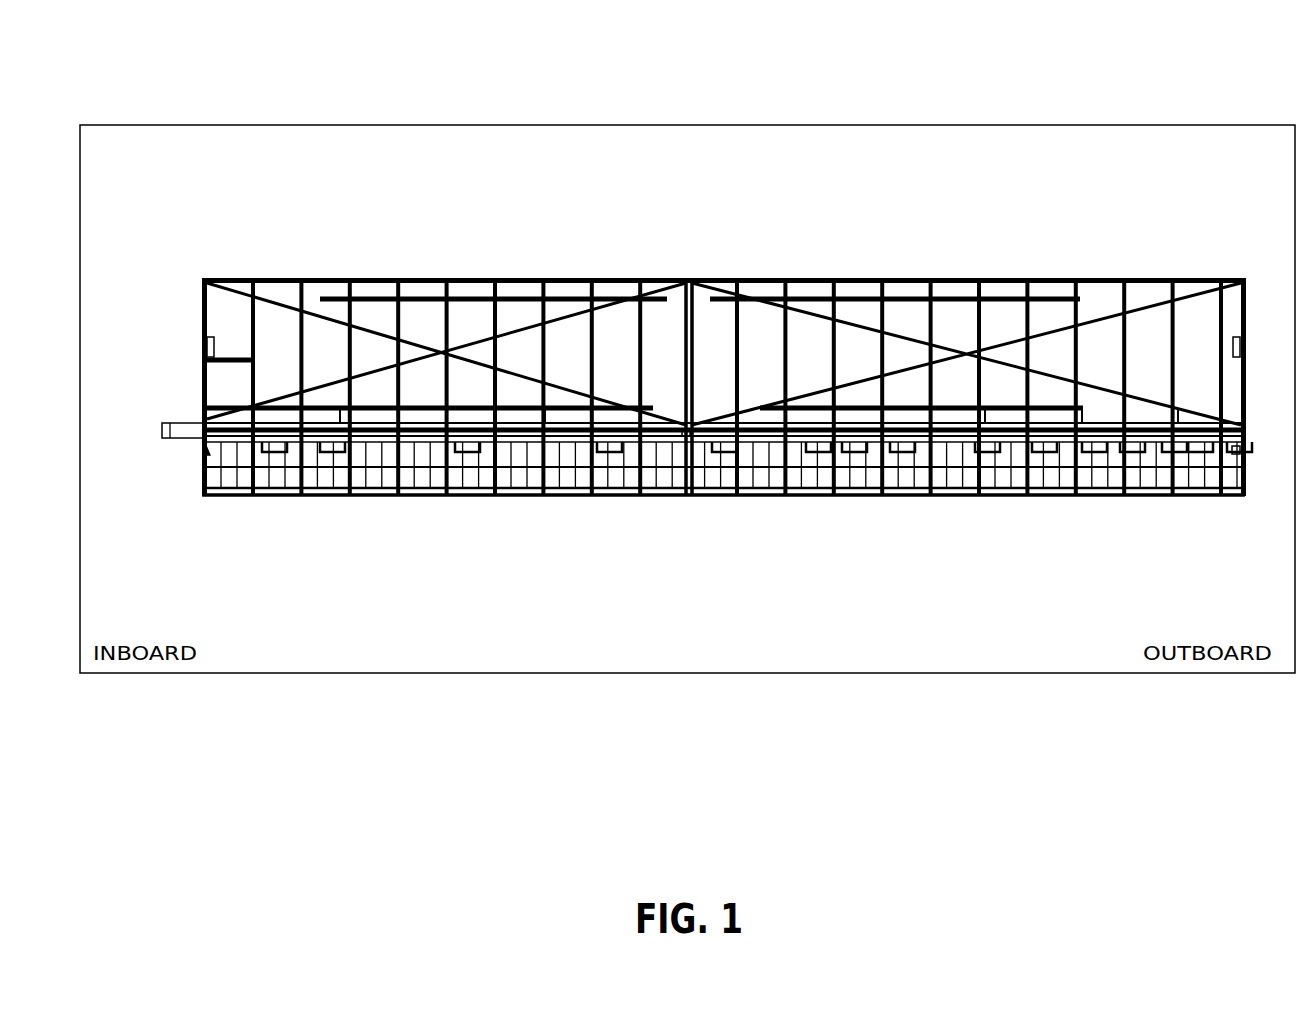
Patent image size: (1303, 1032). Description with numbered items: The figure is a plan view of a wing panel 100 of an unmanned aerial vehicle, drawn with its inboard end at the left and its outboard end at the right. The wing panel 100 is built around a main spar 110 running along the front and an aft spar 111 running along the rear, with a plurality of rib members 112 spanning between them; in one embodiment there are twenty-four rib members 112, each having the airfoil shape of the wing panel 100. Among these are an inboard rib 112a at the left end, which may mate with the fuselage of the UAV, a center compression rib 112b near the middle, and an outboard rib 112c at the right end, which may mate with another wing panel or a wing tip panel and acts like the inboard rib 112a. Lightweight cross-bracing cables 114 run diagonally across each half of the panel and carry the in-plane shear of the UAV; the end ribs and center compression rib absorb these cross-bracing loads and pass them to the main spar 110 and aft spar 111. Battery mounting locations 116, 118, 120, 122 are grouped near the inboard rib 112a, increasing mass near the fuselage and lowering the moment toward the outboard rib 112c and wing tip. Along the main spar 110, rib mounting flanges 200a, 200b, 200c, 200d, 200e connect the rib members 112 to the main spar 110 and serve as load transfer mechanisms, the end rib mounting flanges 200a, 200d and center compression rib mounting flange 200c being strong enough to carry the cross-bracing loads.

The wing panel 100 is at (1209, 54).
The main spar 110 is at (173, 440).
The aft spar 111 is at (473, 277).
The rib members 112 is at (302, 296).
The inboard rib 112a is at (204, 330).
The center compression rib 112b is at (686, 328).
The outboard rib 112c is at (1241, 320).
The lightweight cross-bracing cables 114 is at (835, 330).
The battery mounting location 116 is at (204, 400).
The battery mounting location 118 is at (232, 491).
The battery mounting location 120 is at (345, 497).
The battery mounting location 122 is at (430, 497).
The end rib mounting flange 200a is at (205, 452).
The rib mounting flange 200b is at (537, 440).
The center compression rib mounting flange 200c is at (686, 434).
The end rib mounting flange 200d is at (1237, 454).
The rib mounting flange 200e is at (882, 454).